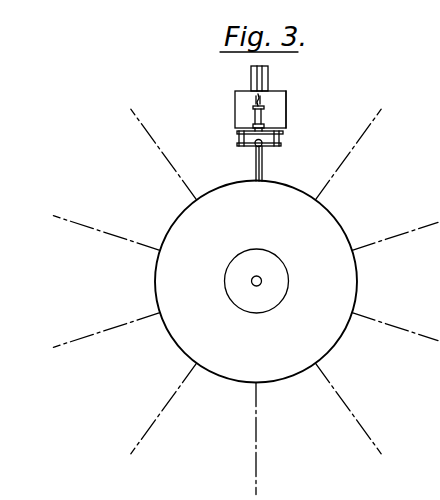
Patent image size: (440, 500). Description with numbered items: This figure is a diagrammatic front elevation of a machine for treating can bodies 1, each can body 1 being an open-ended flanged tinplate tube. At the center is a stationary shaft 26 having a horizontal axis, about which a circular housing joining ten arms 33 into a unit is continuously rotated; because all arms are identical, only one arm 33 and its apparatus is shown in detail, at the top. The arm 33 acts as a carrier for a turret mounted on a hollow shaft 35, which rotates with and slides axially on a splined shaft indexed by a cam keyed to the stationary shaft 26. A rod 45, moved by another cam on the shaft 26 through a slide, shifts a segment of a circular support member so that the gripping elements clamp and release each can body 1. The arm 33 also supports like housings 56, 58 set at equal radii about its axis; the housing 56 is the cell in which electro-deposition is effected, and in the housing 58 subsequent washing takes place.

The can body 1 is at (262, 117).
The stationary shaft 26 is at (262, 284).
The arm 33 is at (325, 227).
The hollow shaft 35 is at (255, 158).
The rod 45 is at (262, 158).
The housing 56 is at (233, 107).
The housing 58 is at (288, 108).